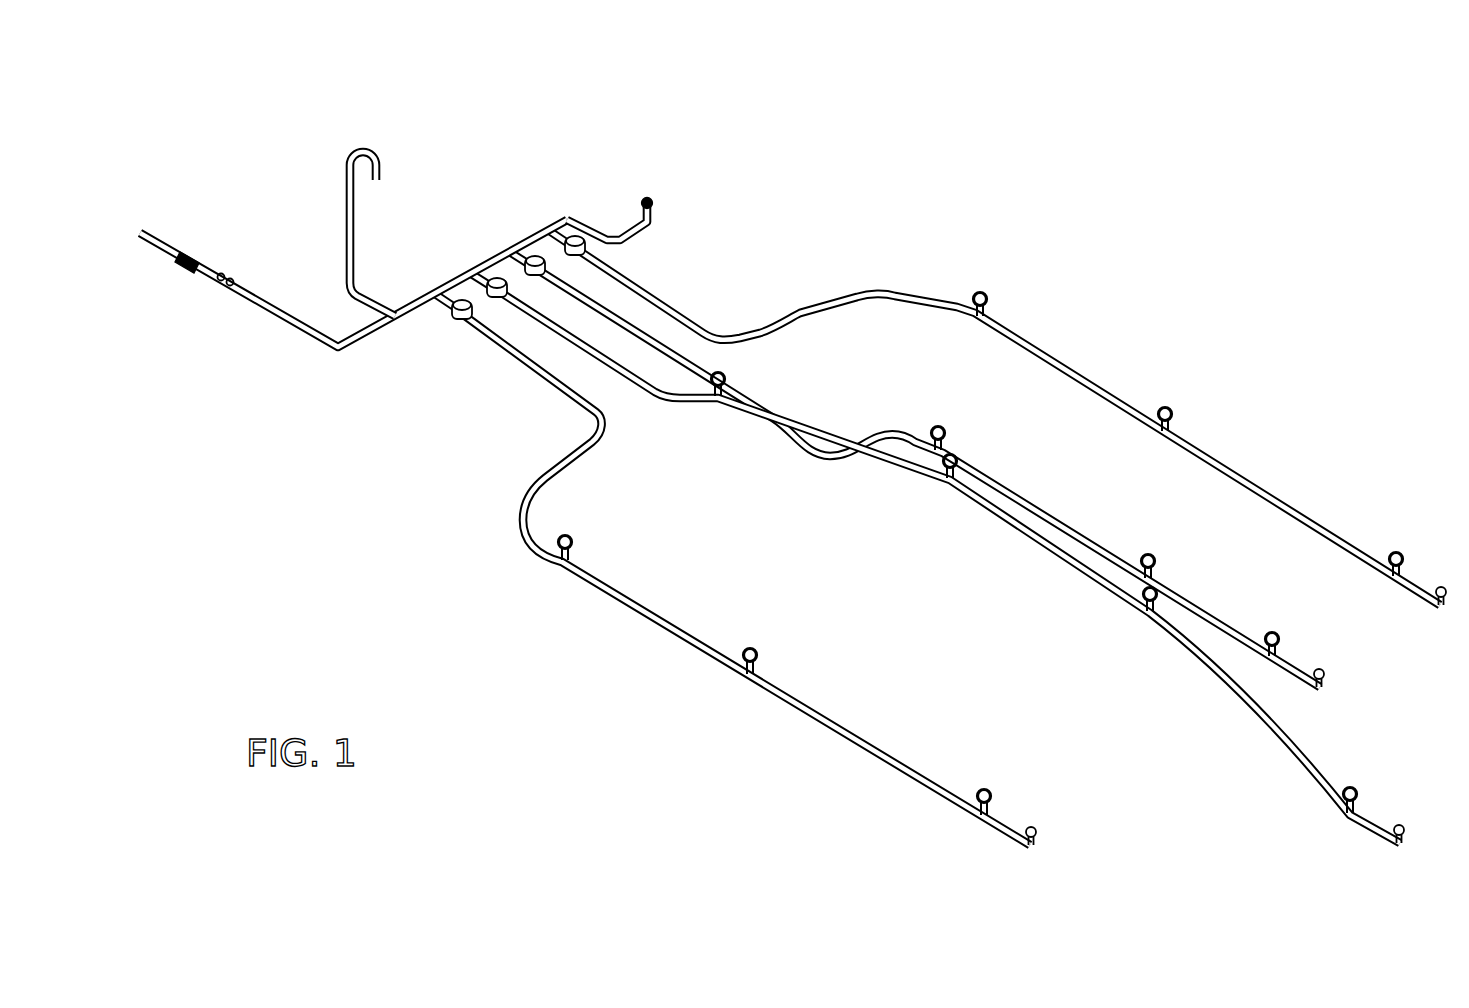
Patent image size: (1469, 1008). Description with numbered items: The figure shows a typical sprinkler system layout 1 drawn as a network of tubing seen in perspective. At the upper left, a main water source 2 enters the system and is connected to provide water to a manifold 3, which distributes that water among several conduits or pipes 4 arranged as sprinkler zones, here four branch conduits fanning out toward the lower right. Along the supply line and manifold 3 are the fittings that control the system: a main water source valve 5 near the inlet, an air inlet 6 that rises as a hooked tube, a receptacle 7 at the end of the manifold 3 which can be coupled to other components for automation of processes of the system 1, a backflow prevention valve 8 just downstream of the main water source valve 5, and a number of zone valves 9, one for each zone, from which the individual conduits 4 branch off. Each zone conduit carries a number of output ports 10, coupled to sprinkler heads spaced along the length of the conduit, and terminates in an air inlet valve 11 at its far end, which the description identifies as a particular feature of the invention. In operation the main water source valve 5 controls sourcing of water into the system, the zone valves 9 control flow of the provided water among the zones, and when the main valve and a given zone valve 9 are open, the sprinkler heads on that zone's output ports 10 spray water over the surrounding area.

The sprinkler system layout 1 is at (784, 463).
The main water source 2 is at (162, 237).
The manifold 3 is at (569, 214).
The conduits or pipes 4 is at (660, 305).
The main water source valve 5 is at (189, 272).
The air inlet 6 is at (368, 148).
The receptacle 7 is at (656, 200).
The backflow prevention valve 8 is at (224, 291).
The zone valves 9 is at (590, 252).
The output ports 10 is at (996, 296).
The air inlet valve 11 is at (1041, 810).